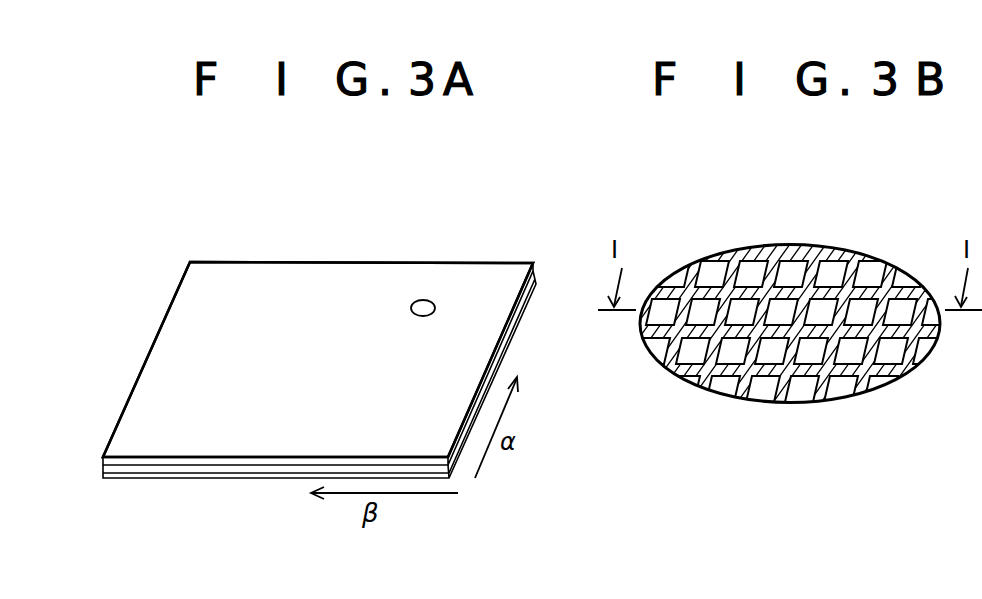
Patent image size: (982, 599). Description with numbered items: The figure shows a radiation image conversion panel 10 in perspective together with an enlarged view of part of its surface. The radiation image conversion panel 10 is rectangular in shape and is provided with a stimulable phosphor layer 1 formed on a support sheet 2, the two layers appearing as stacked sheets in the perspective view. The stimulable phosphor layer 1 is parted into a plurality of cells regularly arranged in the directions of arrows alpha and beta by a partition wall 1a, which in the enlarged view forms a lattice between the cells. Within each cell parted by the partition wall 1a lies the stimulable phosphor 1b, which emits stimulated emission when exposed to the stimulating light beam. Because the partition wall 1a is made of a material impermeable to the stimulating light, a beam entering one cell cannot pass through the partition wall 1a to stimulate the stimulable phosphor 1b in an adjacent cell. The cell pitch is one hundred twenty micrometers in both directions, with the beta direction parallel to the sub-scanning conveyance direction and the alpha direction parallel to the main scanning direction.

In FIG. 3A, the radiation image conversion panel 10 is at (359, 183).
In FIG. 3A, the stimulable phosphor layer 1 is at (103, 462).
In FIG. 3A, the support sheet 2 is at (103, 470).
In FIG. 3B, the partition wall 1a is at (818, 252).
In FIG. 3B, the stimulable phosphor 1b is at (755, 270).